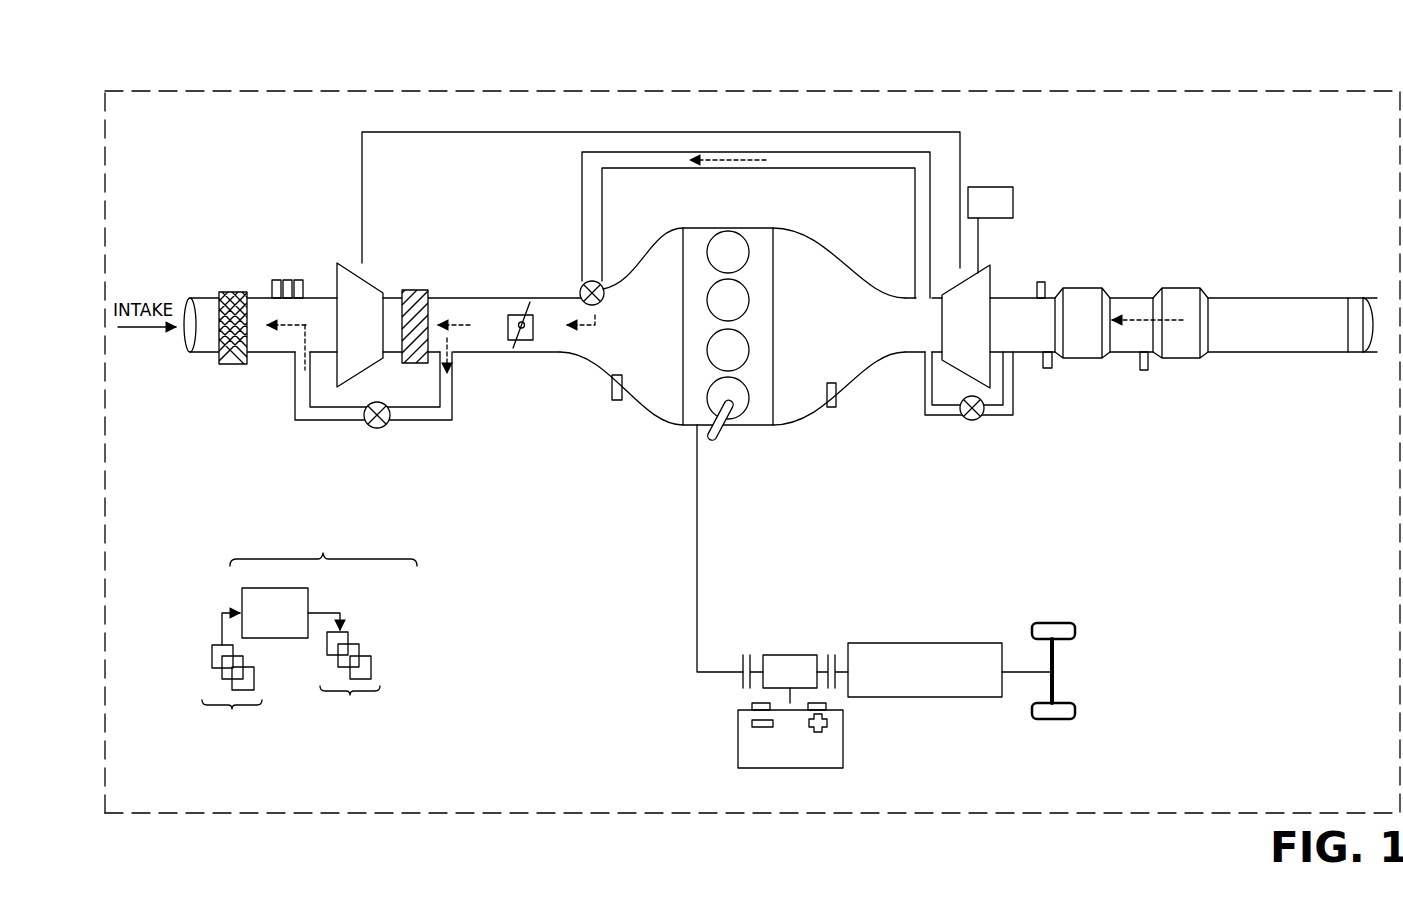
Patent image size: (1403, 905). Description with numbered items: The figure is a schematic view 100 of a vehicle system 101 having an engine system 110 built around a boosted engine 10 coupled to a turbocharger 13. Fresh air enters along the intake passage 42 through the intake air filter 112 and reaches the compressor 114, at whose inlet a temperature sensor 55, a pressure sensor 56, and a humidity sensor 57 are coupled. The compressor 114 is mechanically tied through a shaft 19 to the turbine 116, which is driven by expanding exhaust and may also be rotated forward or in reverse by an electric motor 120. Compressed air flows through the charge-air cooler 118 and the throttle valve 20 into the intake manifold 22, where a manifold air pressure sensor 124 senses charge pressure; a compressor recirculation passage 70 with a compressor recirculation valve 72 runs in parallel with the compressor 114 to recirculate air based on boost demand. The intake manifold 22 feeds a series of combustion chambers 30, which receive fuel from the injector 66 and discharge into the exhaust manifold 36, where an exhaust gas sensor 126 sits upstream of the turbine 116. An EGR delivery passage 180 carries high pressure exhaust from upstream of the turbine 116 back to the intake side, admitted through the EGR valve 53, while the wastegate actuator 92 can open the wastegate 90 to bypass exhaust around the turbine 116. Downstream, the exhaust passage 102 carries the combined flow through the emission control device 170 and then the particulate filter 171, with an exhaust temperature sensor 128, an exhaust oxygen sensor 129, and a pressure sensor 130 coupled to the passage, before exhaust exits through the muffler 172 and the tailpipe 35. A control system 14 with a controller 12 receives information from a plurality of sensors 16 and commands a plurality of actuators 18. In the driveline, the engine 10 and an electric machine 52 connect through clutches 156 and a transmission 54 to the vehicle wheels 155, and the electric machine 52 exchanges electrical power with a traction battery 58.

The schematic view 100 is at (1299, 57).
The vehicle system 101 is at (892, 817).
The engine system 110 is at (1216, 184).
The intake passage 42 is at (200, 355).
The intake air filter 112 is at (225, 291).
The temperature sensor 55 is at (274, 281).
The pressure sensor 56 is at (286, 281).
The humidity sensor 57 is at (298, 281).
The compressor 114 is at (322, 325).
The shaft 19 is at (958, 132).
The charge-air cooler 118 is at (408, 291).
The compressor recirculation passage 70 is at (311, 421).
The compressor recirculation valve 72 is at (368, 426).
The turbocharger 13 is at (388, 447).
The throttle valve 20 is at (533, 338).
The EGR valve 53 is at (604, 298).
The EGR delivery passage 180 is at (790, 170).
The intake manifold 22 is at (621, 326).
The manifold air pressure sensor 124 is at (612, 393).
The engine 10 is at (778, 310).
The combustion chambers 30 is at (749, 245).
The exhaust manifold 36 is at (839, 326).
The exhaust gas sensor 126 is at (835, 393).
The fuel injector 66 is at (717, 437).
The turbine 116 is at (923, 300).
The electric motor 120 is at (990, 230).
The wastegate 90 is at (925, 418).
The wastegate actuator 92 is at (968, 421).
The exhaust temperature sensor 128 is at (1040, 281).
The exhaust oxygen sensor 129 is at (1047, 369).
The emission control device 170 is at (1085, 289).
The pressure sensor 130 is at (1145, 371).
The particulate filter 171 is at (1172, 288).
The exhaust passage 102 is at (1208, 356).
The muffler 172 is at (1356, 297).
The tailpipe 35 is at (1368, 352).
The control system 14 is at (323, 528).
The controller 12 is at (275, 613).
The sensors 16 is at (236, 684).
The actuators 18 is at (351, 680).
The clutches 156 is at (743, 661).
The electric machine 52 is at (785, 655).
The transmission 54 is at (980, 697).
The vehicle wheels 155 is at (1060, 721).
The traction battery 58 is at (843, 745).